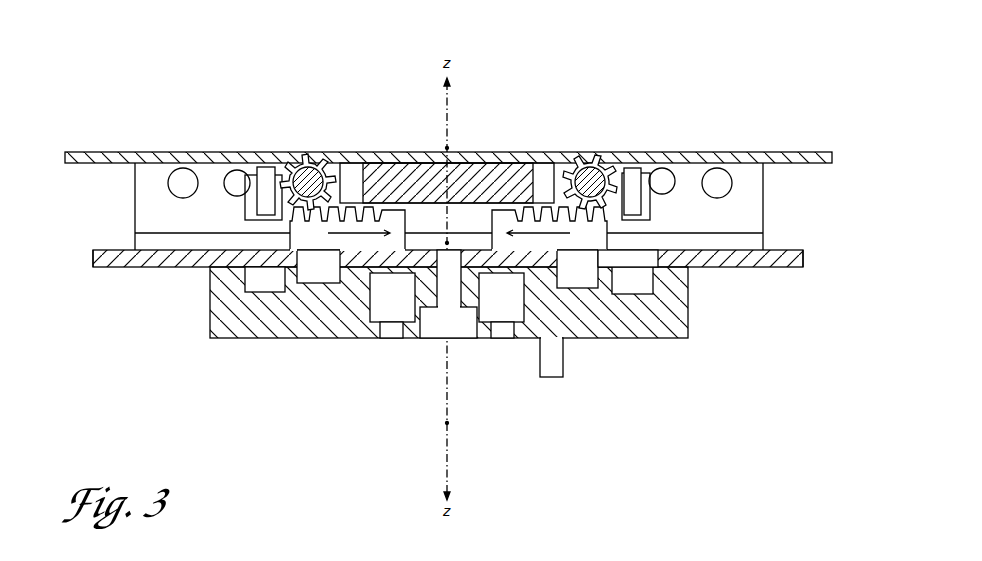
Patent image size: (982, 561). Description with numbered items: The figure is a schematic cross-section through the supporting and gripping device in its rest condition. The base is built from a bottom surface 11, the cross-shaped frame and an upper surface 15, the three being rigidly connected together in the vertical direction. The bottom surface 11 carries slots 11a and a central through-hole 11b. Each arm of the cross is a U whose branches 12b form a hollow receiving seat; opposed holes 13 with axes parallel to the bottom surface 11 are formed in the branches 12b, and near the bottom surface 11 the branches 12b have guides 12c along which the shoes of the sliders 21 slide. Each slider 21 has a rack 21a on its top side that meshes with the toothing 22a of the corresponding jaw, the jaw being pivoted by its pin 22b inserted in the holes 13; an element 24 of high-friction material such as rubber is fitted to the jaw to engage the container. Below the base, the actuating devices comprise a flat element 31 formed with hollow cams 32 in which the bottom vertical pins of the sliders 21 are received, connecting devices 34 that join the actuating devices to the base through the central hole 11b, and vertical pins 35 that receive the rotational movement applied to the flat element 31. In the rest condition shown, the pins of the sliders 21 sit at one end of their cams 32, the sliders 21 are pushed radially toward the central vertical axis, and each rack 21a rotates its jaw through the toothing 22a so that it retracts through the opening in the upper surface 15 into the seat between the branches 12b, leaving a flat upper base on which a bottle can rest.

The bottom surface 11 is at (800, 263).
The slot 11a is at (205, 251).
The central through-hole 11b is at (447, 263).
The branches of the U 12b is at (145, 178).
The guides 12c is at (153, 244).
The holes 13 is at (183, 186).
The upper surface 15 is at (788, 151).
The slider 21 is at (327, 277).
The rack 21a is at (435, 175).
The toothing 22a is at (338, 180).
The pin 22b is at (307, 175).
The high-friction element 24 is at (640, 173).
The flat element 31 is at (665, 334).
The hollow cam 32 is at (265, 287).
The connecting devices 34 is at (463, 329).
The vertical pin 35 is at (547, 366).